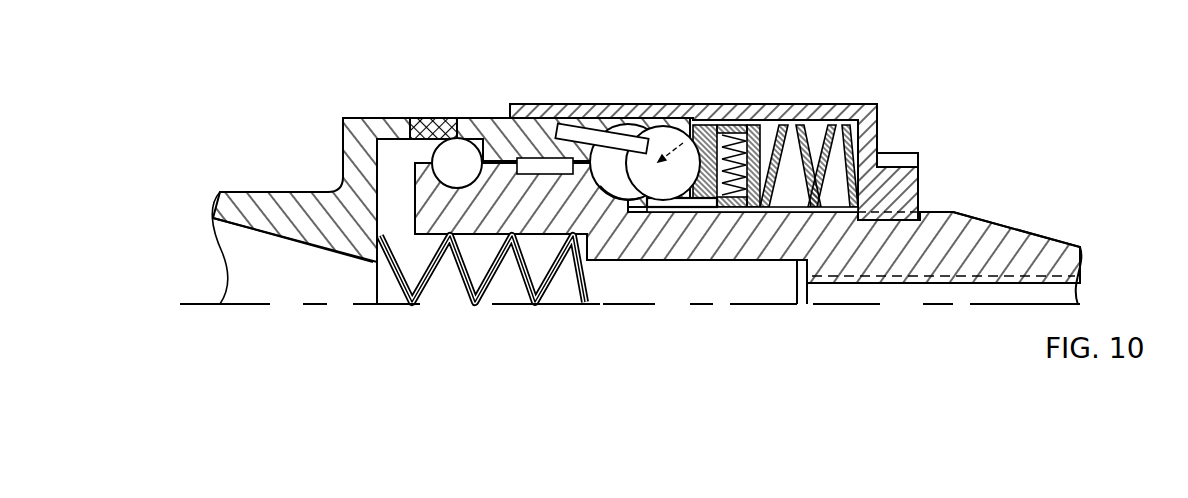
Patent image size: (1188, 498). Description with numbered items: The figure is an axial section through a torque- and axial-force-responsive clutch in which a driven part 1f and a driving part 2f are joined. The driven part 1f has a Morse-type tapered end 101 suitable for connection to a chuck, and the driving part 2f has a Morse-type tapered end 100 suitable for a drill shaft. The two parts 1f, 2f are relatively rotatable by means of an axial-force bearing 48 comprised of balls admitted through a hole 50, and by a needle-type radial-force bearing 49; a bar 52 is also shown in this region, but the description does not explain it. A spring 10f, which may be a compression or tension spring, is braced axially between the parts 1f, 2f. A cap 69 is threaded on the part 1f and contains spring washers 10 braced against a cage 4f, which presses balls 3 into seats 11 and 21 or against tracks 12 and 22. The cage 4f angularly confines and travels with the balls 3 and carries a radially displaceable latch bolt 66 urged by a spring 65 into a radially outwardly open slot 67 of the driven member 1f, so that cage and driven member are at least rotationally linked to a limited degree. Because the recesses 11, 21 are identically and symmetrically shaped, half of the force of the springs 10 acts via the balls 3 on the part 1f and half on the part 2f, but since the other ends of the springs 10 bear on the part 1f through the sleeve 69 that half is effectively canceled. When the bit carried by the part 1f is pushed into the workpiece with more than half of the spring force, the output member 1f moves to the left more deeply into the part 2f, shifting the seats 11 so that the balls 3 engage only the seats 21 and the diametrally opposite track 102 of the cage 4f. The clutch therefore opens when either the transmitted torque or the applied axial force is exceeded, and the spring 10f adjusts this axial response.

The driving part 2f is at (353, 128).
The hole 50 is at (413, 117).
The axial-force bearing 48 is at (457, 163).
The needle-type radial-force bearing 49 is at (543, 165).
The lever bar 52 is at (589, 140).
The seat 21 is at (631, 127).
The track 22 is at (652, 123).
The track of the cage 102 is at (676, 125).
The cage 4f is at (743, 100).
The spring 65 is at (742, 138).
The cap 69 is at (867, 145).
The tapered end 101 is at (993, 223).
The tapered end 100 is at (248, 233).
The spring 10f is at (455, 285).
The seat 11 is at (548, 258).
The balls 3 is at (587, 255).
The slot 67 is at (645, 212).
The latch bolt 66 is at (720, 212).
The driven part 1f is at (760, 237).
The spring washers 10 is at (805, 185).
The track 12 is at (633, 200).